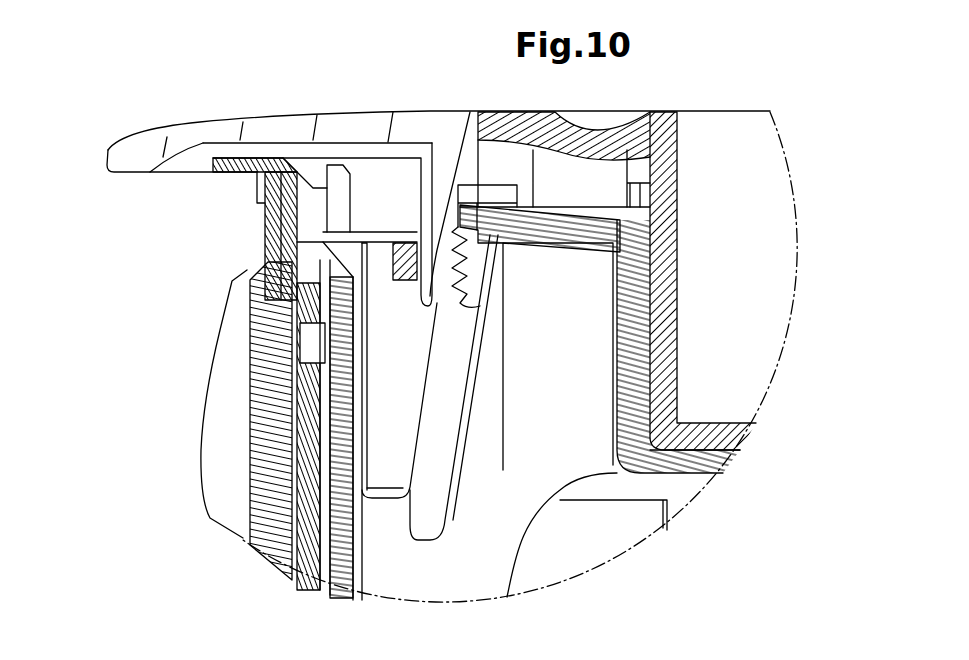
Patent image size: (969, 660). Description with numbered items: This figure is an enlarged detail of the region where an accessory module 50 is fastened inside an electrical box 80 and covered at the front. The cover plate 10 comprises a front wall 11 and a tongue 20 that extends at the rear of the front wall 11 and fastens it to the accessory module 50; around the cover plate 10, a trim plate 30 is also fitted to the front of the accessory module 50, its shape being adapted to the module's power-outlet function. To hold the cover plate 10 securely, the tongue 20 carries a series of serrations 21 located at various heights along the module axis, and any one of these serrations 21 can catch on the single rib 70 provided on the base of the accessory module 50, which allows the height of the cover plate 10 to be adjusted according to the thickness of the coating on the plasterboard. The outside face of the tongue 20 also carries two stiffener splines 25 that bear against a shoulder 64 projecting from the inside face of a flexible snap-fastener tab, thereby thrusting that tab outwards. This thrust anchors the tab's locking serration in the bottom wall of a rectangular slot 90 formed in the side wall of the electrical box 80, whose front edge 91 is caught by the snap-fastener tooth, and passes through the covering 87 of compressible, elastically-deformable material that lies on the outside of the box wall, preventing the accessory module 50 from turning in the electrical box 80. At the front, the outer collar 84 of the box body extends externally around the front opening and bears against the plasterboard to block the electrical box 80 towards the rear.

The cover plate 10 is at (185, 118).
The front wall 11 is at (266, 116).
The tongue 20 is at (403, 143).
The serration 21 is at (473, 300).
The stiffener spline 25 is at (408, 222).
The trim plate 30 is at (682, 173).
The accessory module 50 is at (663, 308).
The shoulder 64 is at (424, 305).
The rib 70 is at (487, 277).
The electrical box 80 is at (258, 563).
The outer collar 84 is at (230, 177).
The covering 87 is at (207, 362).
The rectangular slot 90 is at (350, 228).
The front edge 91 is at (252, 270).